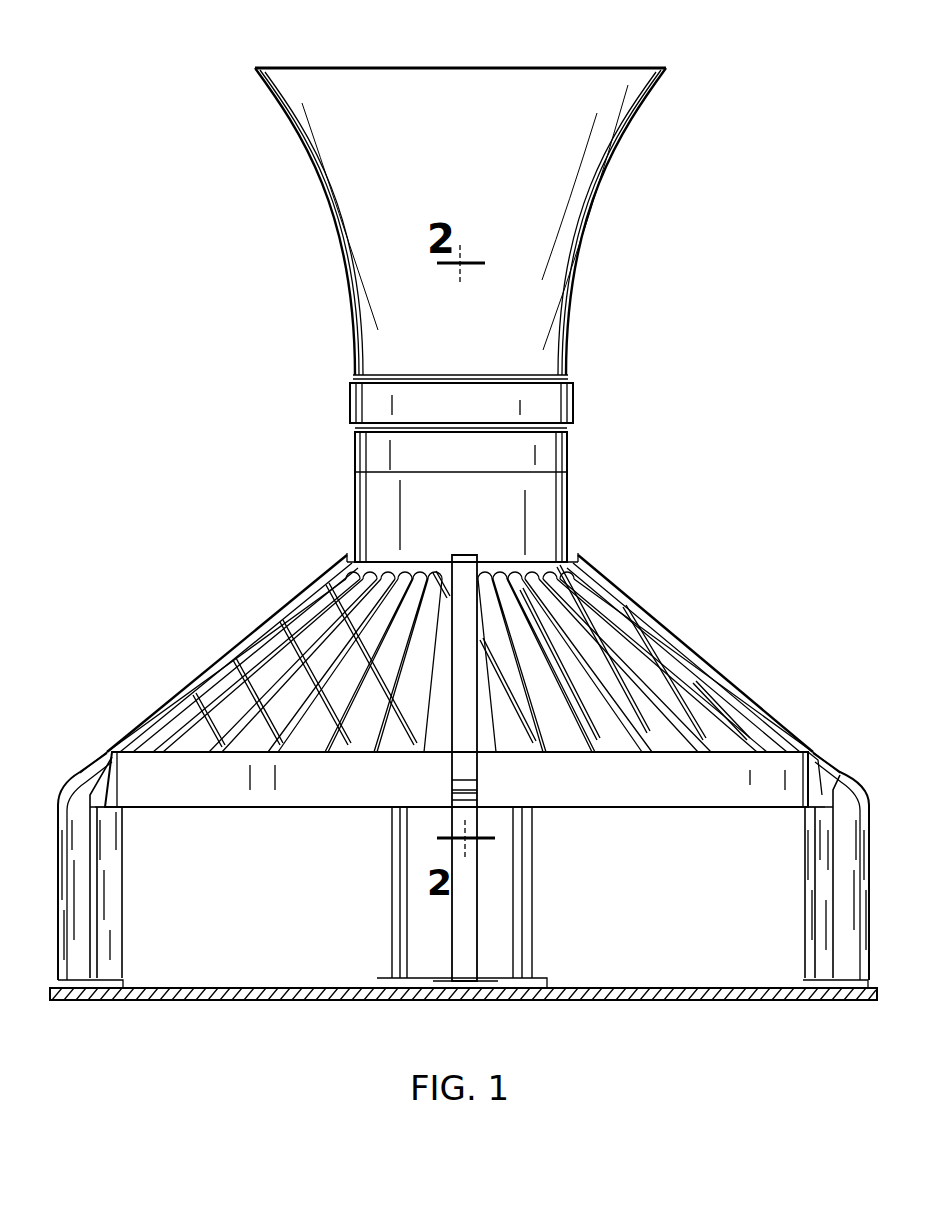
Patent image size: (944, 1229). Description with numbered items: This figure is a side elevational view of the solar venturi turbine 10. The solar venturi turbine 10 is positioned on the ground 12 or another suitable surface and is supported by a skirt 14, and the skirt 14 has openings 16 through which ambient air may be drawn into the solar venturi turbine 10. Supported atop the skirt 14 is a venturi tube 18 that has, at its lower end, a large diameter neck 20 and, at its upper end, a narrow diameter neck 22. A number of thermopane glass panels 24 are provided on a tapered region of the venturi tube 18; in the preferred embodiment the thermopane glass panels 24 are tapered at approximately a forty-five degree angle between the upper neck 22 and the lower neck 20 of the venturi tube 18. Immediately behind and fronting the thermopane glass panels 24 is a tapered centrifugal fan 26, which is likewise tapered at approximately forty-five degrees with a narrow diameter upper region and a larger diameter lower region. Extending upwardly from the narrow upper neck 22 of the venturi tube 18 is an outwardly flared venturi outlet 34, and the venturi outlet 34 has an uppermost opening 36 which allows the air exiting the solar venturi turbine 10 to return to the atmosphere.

The solar venturi turbine 10 is at (165, 455).
The ground 12 is at (247, 1000).
The skirt 14 is at (805, 893).
The openings 16 is at (285, 933).
The venturi tube 18 is at (697, 640).
The large diameter neck 20 is at (463, 779).
The narrow diameter neck 22 is at (568, 502).
The thermopane glass panels 24 is at (293, 658).
The tapered centrifugal fan 26 is at (763, 727).
The venturi outlet 34 is at (460, 221).
The uppermost opening 36 is at (512, 54).